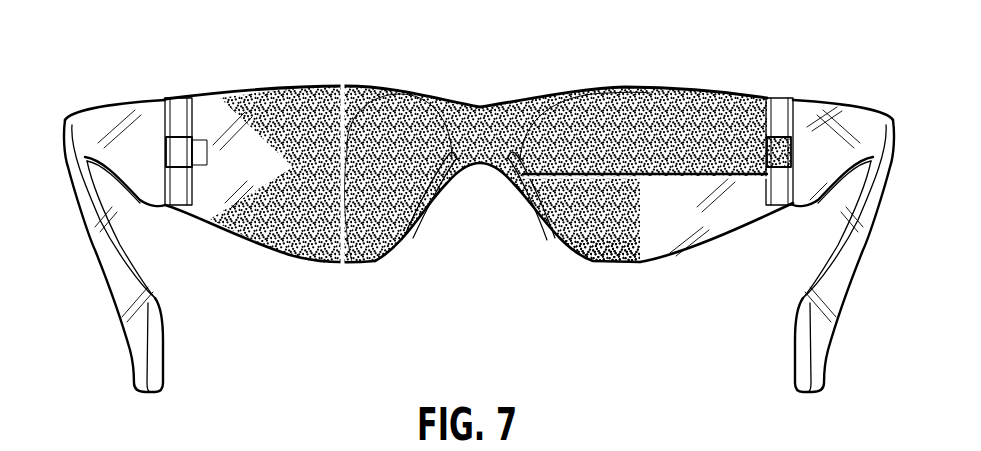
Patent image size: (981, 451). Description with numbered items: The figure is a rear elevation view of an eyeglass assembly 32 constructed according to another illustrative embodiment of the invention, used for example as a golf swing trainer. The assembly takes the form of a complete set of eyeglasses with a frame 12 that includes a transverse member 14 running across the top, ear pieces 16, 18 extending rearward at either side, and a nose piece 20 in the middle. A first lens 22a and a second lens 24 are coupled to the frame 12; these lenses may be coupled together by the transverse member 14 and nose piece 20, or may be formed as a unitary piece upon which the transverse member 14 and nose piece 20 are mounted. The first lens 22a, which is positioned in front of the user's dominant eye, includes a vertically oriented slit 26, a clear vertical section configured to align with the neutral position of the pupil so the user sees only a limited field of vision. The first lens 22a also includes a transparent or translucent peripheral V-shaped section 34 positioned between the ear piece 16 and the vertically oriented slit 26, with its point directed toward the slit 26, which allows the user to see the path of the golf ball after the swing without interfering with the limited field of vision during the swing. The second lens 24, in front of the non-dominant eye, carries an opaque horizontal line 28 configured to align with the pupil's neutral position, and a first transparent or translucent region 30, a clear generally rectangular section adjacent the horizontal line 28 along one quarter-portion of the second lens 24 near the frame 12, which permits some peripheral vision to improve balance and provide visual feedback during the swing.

The eyeglass assembly 32 is at (138, 60).
The frame 12 is at (313, 92).
The transverse member 14 is at (480, 106).
The vertically oriented slit 26 is at (344, 93).
The peripheral V-shaped section 34 is at (258, 171).
The nose piece 20 is at (507, 187).
The first lens 22a is at (328, 263).
The second lens 24 is at (617, 263).
The first transparent or translucent region 30 is at (690, 219).
The opaque horizontal line 28 is at (737, 177).
The ear piece 16 is at (162, 340).
The ear piece 18 is at (836, 293).